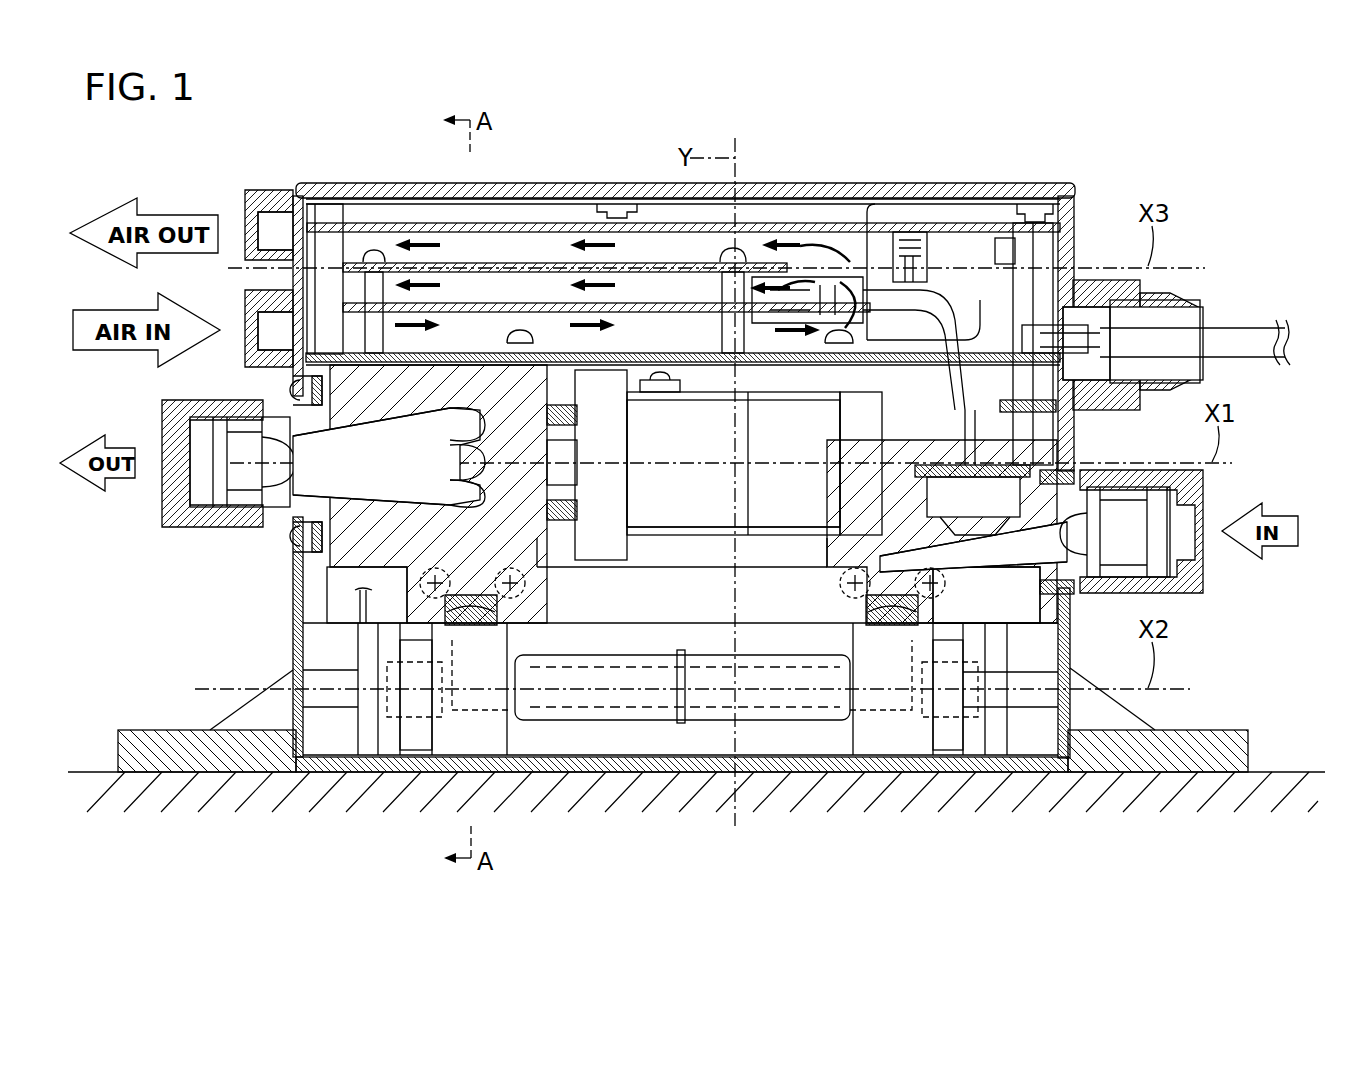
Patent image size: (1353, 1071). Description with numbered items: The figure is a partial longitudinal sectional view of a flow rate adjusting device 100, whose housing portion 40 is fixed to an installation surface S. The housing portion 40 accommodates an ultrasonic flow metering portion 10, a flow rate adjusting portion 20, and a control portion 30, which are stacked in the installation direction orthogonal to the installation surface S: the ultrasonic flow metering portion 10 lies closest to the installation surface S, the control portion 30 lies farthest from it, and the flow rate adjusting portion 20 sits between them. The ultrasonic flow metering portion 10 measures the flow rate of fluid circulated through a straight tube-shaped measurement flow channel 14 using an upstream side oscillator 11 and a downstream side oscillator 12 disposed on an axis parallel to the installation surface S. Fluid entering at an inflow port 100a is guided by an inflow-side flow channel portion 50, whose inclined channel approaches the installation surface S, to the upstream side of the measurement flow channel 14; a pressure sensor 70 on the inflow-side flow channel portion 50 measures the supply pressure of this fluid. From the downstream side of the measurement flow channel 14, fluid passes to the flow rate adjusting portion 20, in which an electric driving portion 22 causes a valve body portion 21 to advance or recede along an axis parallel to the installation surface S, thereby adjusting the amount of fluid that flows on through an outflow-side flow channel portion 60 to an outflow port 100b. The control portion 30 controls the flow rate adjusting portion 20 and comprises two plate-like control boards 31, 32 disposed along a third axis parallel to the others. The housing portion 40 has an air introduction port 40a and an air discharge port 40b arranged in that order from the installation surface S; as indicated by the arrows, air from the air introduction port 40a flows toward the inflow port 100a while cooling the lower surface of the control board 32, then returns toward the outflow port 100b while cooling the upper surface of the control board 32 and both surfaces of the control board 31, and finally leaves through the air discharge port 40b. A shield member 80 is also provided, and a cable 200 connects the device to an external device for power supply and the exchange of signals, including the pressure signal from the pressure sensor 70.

The flow rate adjusting device 100 is at (1012, 152).
The inflow port 100a is at (1190, 516).
The outflow port 100b is at (172, 450).
The ultrasonic flow metering portion 10 is at (797, 722).
The upstream side oscillator 11 is at (945, 720).
The downstream side oscillator 12 is at (415, 720).
The measurement flow channel 14 is at (578, 683).
The flow rate adjusting portion 20 is at (728, 499).
The valve body portion 21 is at (462, 470).
The electric driving portion 22 is at (768, 538).
The control portion 30 is at (683, 201).
The control board 31 is at (510, 232).
The control board 32 is at (560, 300).
The housing portion 40 is at (832, 183).
The air introduction port 40a is at (243, 312).
The air discharge port 40b is at (242, 215).
The inflow-side flow channel portion 50 is at (1090, 472).
The outflow-side flow channel portion 60 is at (268, 392).
The pressure sensor 70 is at (968, 475).
The shield member 80 is at (682, 757).
The cable 200 is at (1240, 330).
The installation surface S is at (84, 770).